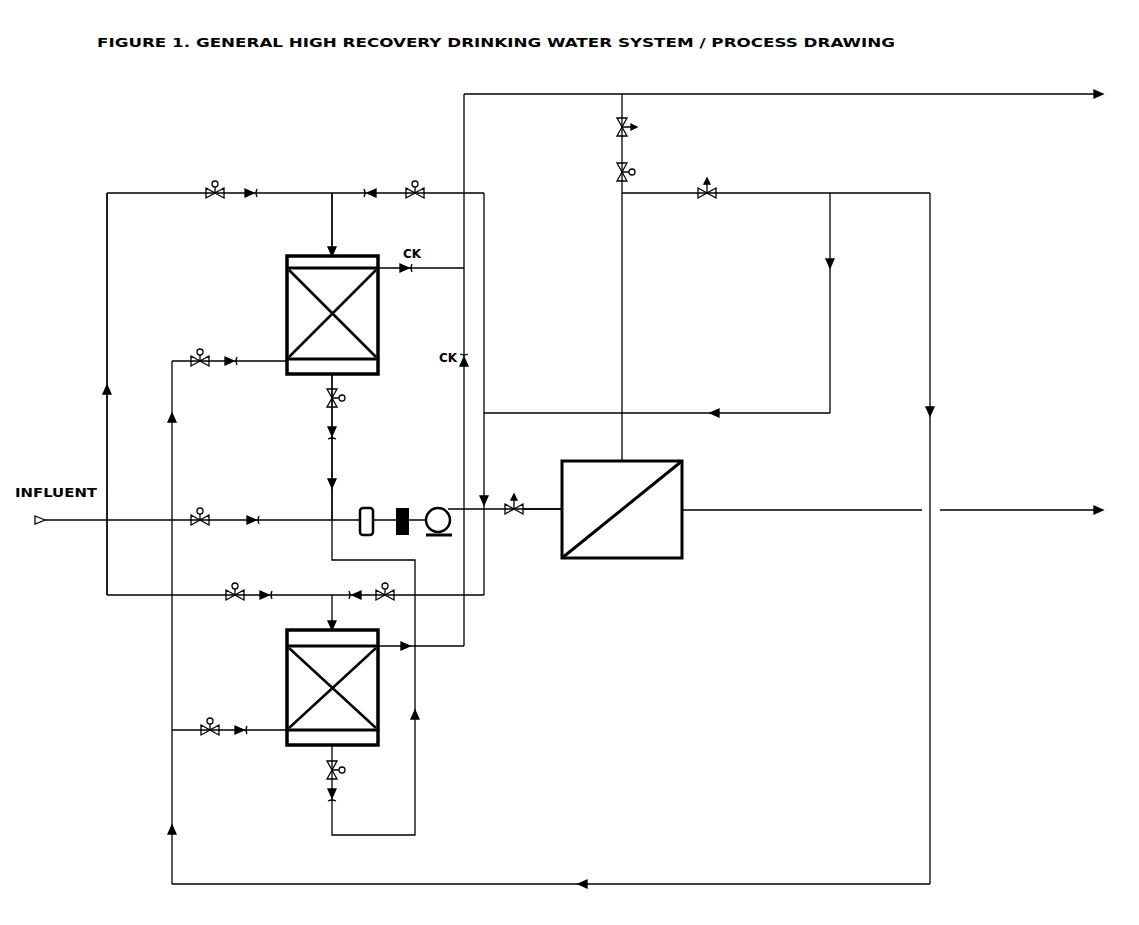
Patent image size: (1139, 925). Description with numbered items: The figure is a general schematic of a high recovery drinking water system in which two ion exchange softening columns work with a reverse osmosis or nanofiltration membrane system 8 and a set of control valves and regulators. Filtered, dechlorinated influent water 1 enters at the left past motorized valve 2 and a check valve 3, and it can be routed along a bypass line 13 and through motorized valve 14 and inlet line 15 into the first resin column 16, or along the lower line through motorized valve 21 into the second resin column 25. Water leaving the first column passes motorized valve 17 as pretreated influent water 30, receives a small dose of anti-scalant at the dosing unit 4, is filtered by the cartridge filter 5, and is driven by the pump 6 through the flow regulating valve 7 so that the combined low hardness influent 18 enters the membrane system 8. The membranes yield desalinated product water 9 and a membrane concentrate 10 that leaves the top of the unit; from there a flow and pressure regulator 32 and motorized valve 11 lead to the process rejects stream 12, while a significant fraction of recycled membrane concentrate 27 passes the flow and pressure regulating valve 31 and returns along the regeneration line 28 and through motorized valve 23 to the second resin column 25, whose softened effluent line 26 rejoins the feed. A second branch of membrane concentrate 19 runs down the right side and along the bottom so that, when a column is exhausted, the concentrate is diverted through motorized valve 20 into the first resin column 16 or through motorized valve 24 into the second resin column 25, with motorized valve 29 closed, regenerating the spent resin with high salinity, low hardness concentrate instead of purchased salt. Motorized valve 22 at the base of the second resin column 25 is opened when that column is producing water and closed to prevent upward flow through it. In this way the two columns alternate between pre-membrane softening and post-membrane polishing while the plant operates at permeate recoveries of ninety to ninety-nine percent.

The influent water 1 is at (88, 528).
The motorized valve MV2 2 is at (200, 528).
The influent check valve 3 is at (255, 528).
The anti-scalant dosing unit 4 is at (364, 537).
The cartridge filter 5 is at (398, 538).
The pump 6 is at (436, 537).
The flow regulating valve 7 is at (514, 494).
The membrane system 8 is at (682, 558).
The product water 9 is at (776, 521).
The membrane concentrate 10 is at (620, 285).
The reject manual valve 11 is at (636, 172).
The process rejects stream 12 is at (930, 107).
The bypass line 13 is at (98, 330).
The motorized valve MV14 14 is at (215, 200).
The IX-A inlet line 15 is at (325, 210).
The IX-A resin column 16 is at (284, 325).
The motorized valve MV17 17 is at (346, 400).
The combined low hardness influent 18 is at (550, 520).
The membrane concentrate 19 is at (938, 318).
The motorized valve MV20 20 is at (196, 352).
The motorized valve MV21 21 is at (237, 605).
The motorized valve MV22 22 is at (290, 780).
The motorized valve MV23 23 is at (385, 605).
The motorized valve MV24 24 is at (210, 738).
The IX-B resin column 25 is at (282, 694).
The IX-B outlet line 26 is at (464, 652).
The recycled membrane concentrate 27 is at (835, 258).
The regeneration line 28 is at (488, 295).
The motorized valve MV29 29 is at (415, 200).
The pretreated influent water 30 is at (325, 492).
The flow and pressure regulating valve 31 is at (707, 200).
The reject flow/pressure regulating valve 32 is at (645, 127).